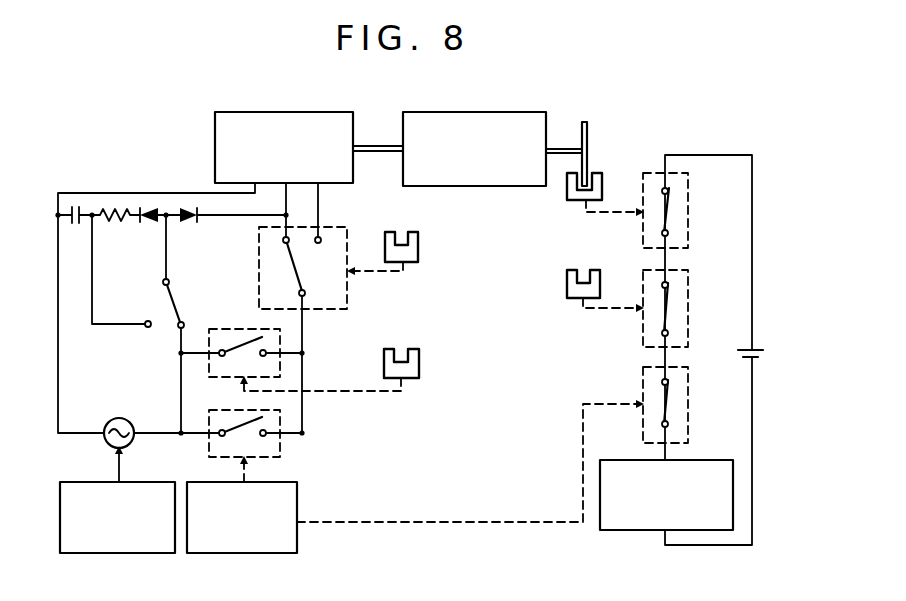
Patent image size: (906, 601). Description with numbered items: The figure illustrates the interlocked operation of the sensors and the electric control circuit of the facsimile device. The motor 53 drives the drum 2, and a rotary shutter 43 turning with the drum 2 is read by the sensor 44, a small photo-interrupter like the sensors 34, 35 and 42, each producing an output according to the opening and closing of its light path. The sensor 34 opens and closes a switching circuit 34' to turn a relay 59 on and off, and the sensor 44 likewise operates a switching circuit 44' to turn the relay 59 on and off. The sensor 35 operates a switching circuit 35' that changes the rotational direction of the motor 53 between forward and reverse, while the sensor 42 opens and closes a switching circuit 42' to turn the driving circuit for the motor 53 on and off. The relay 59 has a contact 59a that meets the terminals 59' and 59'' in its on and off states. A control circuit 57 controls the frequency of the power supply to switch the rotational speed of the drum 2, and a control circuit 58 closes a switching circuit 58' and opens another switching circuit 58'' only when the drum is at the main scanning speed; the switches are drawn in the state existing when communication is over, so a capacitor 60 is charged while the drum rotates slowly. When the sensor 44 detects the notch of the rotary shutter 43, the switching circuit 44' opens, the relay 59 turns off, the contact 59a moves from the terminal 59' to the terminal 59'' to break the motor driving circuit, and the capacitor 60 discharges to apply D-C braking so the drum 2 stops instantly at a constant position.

The drum 2 is at (474, 112).
The sensor 34 is at (582, 291).
The switching circuit 34' is at (637, 310).
The sensor 35 is at (402, 250).
The switching circuit 35' is at (330, 272).
The sensor 42 is at (353, 368).
The switching circuit 42' is at (244, 332).
The rotary shutter 43 is at (589, 130).
The sensor 44 is at (585, 200).
The switching circuit 44' is at (665, 181).
The motor 53 is at (279, 112).
The control circuit 57 is at (95, 480).
The control circuit 58 is at (403, 476).
The switching circuit 58' is at (271, 446).
The switching circuit 58'' is at (638, 405).
The relay 59 is at (666, 477).
The contact 59a is at (170, 306).
The terminal 59' is at (196, 305).
The terminal 59'' is at (133, 343).
The capacitor 60 is at (76, 207).